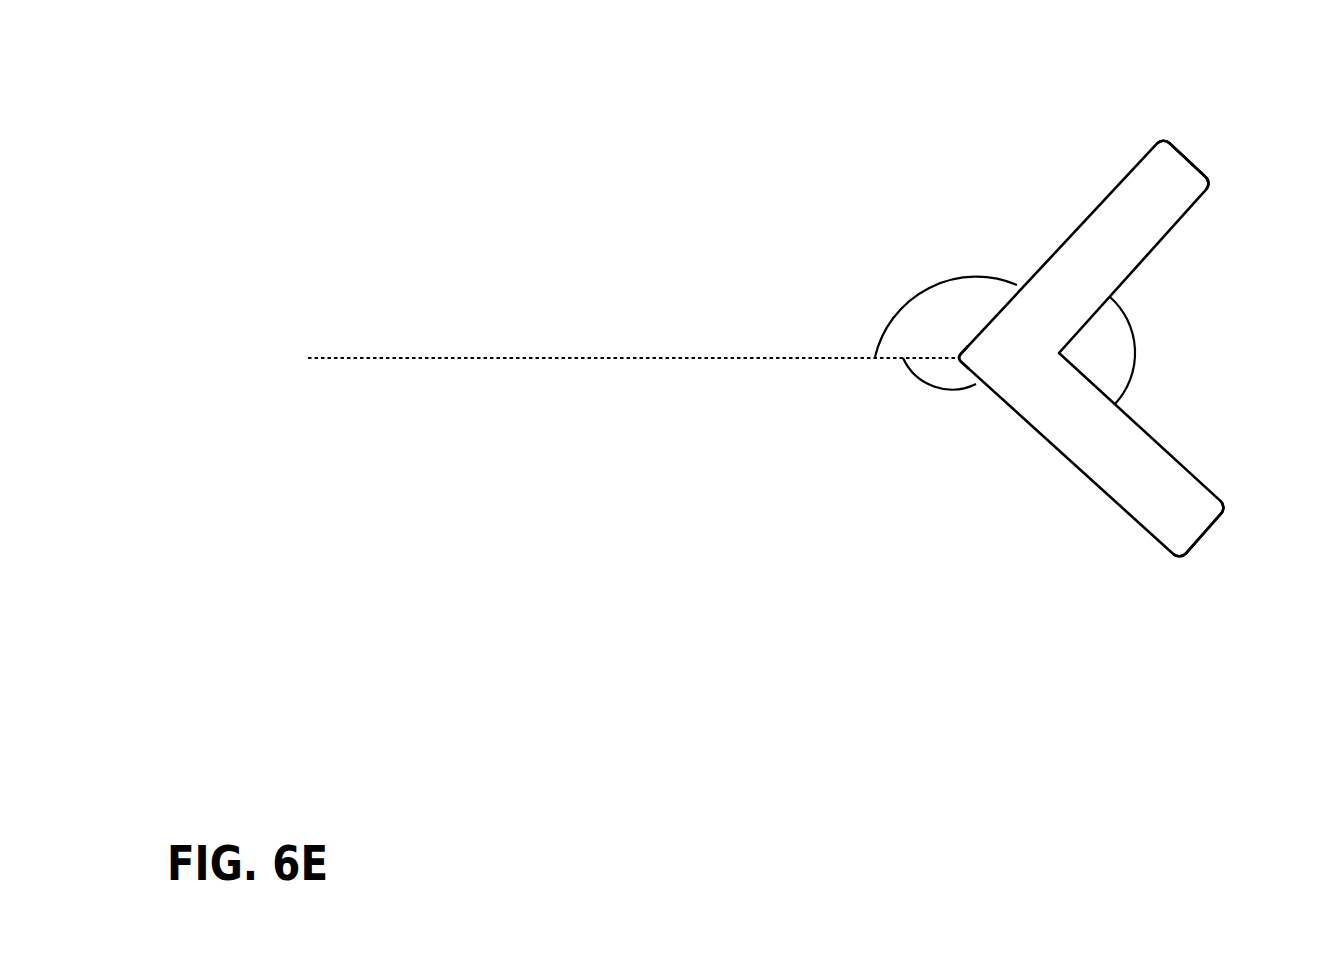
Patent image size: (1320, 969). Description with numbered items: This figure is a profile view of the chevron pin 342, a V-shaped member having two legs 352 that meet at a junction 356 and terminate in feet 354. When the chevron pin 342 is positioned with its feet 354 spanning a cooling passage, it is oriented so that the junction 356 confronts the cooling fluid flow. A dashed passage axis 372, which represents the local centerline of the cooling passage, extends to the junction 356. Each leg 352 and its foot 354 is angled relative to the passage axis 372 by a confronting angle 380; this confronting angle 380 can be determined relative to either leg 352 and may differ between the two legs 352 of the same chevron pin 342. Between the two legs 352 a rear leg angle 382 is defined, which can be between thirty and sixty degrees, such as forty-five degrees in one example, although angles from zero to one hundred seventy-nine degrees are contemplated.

The chevron pin 342 is at (1055, 320).
The leg 352 is at (1103, 225).
The foot 354 is at (1183, 148).
The junction 356 is at (956, 357).
The passage axis 372 is at (628, 358).
The confronting angle 380 is at (940, 283).
The rear leg angle 382 is at (1135, 351).